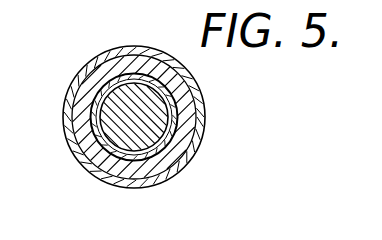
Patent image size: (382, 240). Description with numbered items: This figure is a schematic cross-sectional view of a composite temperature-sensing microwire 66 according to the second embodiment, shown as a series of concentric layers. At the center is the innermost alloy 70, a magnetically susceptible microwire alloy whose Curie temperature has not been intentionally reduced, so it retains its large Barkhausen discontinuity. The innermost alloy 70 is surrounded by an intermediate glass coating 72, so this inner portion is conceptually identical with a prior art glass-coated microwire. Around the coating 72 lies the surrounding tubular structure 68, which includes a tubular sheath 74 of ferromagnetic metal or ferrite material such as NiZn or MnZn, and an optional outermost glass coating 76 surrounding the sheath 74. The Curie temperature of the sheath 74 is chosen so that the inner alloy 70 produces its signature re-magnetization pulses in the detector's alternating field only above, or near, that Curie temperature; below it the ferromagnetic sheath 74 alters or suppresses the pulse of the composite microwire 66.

The composite temperature-sensing microwire 66 is at (220, 98).
The surrounding tubular structure 68 is at (66, 164).
The innermost alloy 70 is at (122, 91).
The intermediate glass coating 72 is at (97, 110).
The tubular sheath 74 is at (185, 145).
The outermost glass coating 76 is at (127, 182).